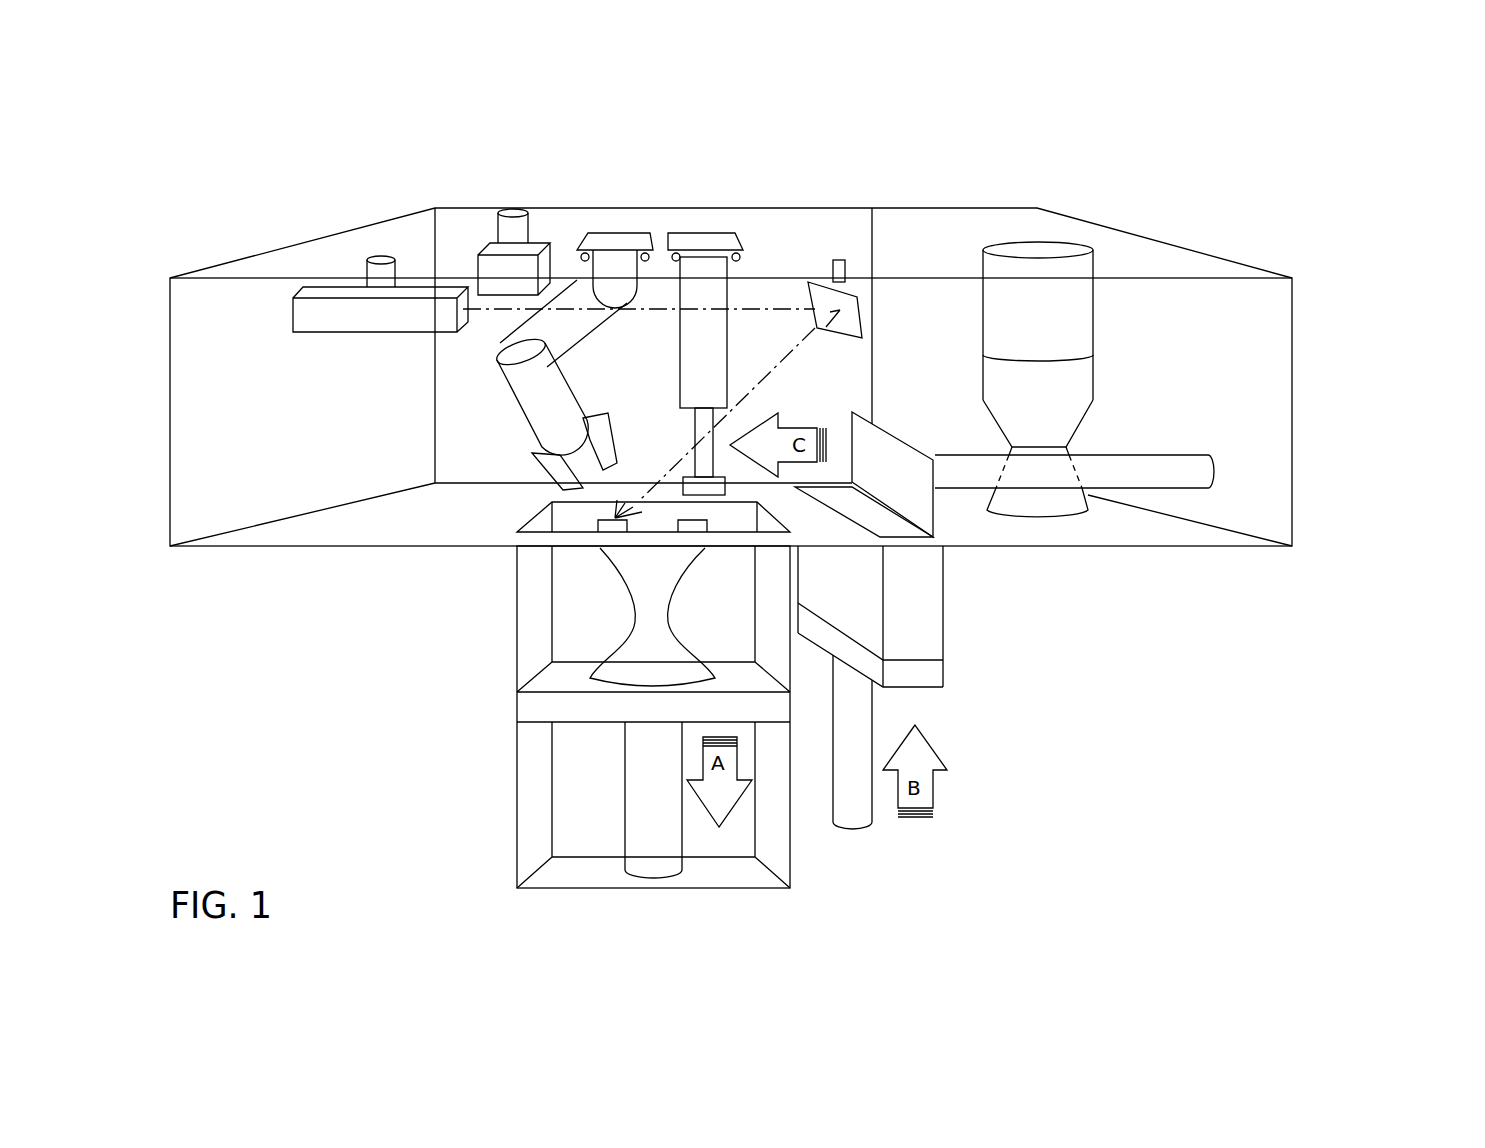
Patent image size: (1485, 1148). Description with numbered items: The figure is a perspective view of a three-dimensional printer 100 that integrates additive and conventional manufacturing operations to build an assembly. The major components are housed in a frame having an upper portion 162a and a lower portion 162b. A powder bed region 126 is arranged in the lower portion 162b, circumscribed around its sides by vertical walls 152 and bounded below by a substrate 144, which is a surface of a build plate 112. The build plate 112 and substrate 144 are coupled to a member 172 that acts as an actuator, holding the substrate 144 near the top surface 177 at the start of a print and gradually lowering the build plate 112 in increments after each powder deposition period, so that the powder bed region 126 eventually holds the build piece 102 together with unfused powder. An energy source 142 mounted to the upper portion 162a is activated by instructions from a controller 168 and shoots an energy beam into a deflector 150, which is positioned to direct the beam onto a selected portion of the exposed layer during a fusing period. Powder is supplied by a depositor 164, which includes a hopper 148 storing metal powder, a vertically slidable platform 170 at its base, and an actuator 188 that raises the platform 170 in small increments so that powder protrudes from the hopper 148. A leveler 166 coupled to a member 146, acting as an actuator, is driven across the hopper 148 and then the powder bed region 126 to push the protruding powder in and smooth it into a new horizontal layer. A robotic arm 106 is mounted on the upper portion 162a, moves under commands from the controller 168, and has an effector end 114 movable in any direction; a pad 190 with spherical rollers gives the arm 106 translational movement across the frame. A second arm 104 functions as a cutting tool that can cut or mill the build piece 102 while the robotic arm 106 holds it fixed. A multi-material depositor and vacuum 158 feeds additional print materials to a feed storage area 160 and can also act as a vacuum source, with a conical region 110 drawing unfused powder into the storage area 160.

The 3-D printer 100 is at (225, 163).
The energy source 142 is at (308, 315).
The controller 168 is at (487, 270).
The robotic arm 106 is at (580, 295).
The pad 190 is at (613, 233).
The arm 104 is at (697, 263).
The deflector 150 is at (815, 282).
The leveler 166 is at (898, 436).
The vacuum 158 is at (1035, 243).
The feed storage area 160 is at (1072, 398).
The member 146 is at (1160, 470).
The upper portion of the frame 162a is at (1310, 517).
The conical region 110 is at (1053, 502).
The depositor 164 is at (955, 534).
The hopper 148 is at (923, 643).
The platform 170 is at (942, 677).
The actuator 188 is at (873, 713).
The effector end 114 is at (538, 457).
The surface 177 is at (540, 534).
The powder bed region 126 is at (550, 580).
The build piece 102 is at (635, 605).
The lower portion of the frame 162b is at (504, 623).
The substrate 144 is at (545, 677).
The build plate 112 is at (528, 702).
The vertical walls 152 is at (517, 737).
The member 172 is at (625, 793).